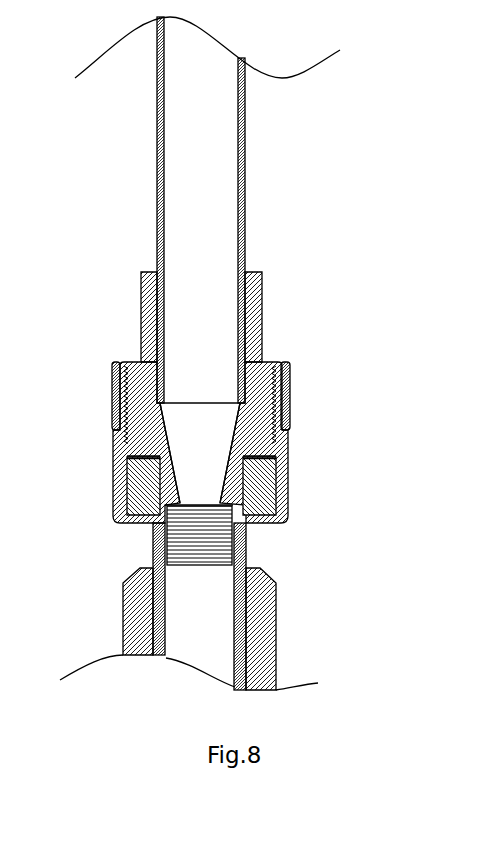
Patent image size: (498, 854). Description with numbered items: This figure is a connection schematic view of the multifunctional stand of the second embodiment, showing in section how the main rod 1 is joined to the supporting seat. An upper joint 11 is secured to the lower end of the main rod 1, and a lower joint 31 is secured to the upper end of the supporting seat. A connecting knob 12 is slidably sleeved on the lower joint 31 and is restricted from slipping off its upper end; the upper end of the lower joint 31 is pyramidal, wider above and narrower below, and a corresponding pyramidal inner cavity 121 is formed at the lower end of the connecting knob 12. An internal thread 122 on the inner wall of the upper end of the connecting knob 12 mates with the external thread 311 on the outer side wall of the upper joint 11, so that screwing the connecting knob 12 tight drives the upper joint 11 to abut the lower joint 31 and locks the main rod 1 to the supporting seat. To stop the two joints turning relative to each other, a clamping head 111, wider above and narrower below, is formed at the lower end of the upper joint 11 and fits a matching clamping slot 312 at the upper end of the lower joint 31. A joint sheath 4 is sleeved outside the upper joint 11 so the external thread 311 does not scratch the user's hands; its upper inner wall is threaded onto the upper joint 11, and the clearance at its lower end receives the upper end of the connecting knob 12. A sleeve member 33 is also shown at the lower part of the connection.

The main rod 1 is at (245, 181).
The upper joint 11 is at (285, 362).
The clamping head 111 is at (288, 445).
The connecting knob 12 is at (288, 500).
The pyramidal inner cavity 121 is at (286, 472).
The internal thread 122 is at (290, 390).
The joint sheath 4 is at (115, 382).
The lower joint 31 is at (115, 480).
The external thread 311 is at (125, 445).
The clamping slot 312 is at (120, 518).
The sleeve member 33 is at (248, 552).